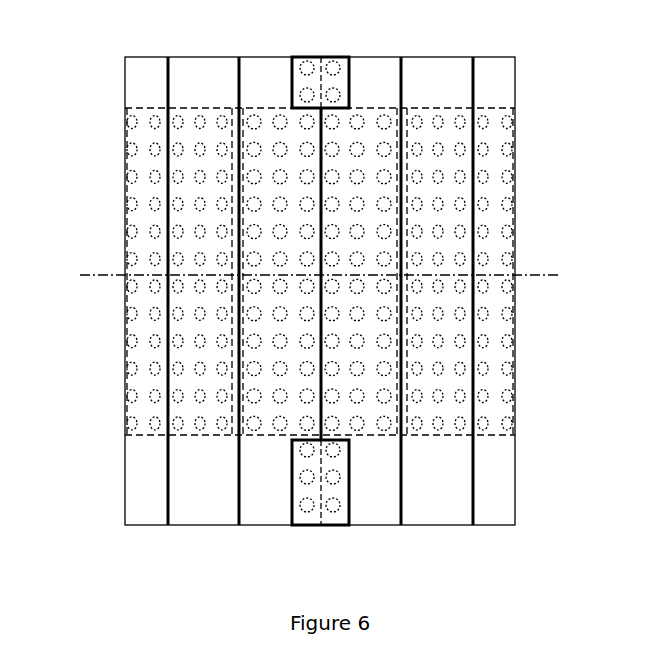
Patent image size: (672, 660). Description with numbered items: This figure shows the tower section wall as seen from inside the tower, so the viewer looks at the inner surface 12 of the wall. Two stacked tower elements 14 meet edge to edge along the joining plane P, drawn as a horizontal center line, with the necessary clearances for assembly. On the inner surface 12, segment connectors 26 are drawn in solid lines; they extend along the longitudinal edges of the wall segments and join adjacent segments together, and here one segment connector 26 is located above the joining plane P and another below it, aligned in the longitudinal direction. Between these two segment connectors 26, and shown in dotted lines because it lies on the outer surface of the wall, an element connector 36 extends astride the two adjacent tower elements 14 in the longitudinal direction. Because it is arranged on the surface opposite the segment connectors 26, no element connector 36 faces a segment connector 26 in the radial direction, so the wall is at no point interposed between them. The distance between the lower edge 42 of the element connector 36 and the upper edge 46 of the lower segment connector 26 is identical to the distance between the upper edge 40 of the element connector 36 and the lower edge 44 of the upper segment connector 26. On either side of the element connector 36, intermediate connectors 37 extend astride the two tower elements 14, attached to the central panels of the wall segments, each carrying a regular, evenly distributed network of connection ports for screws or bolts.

The inner surface 12 is at (293, 291).
The tower element 14 is at (542, 120).
The segment connector 26 is at (293, 85).
The element connector 36 is at (268, 322).
The intermediate connector 37 is at (131, 212).
The upper edge of the element connector 40 is at (375, 108).
The lower edge of the element connector 42 is at (375, 437).
The lower edge of the upper segment connector 44 is at (296, 112).
The upper edge of the lower segment connector 46 is at (297, 435).
The joining plane P is at (540, 275).